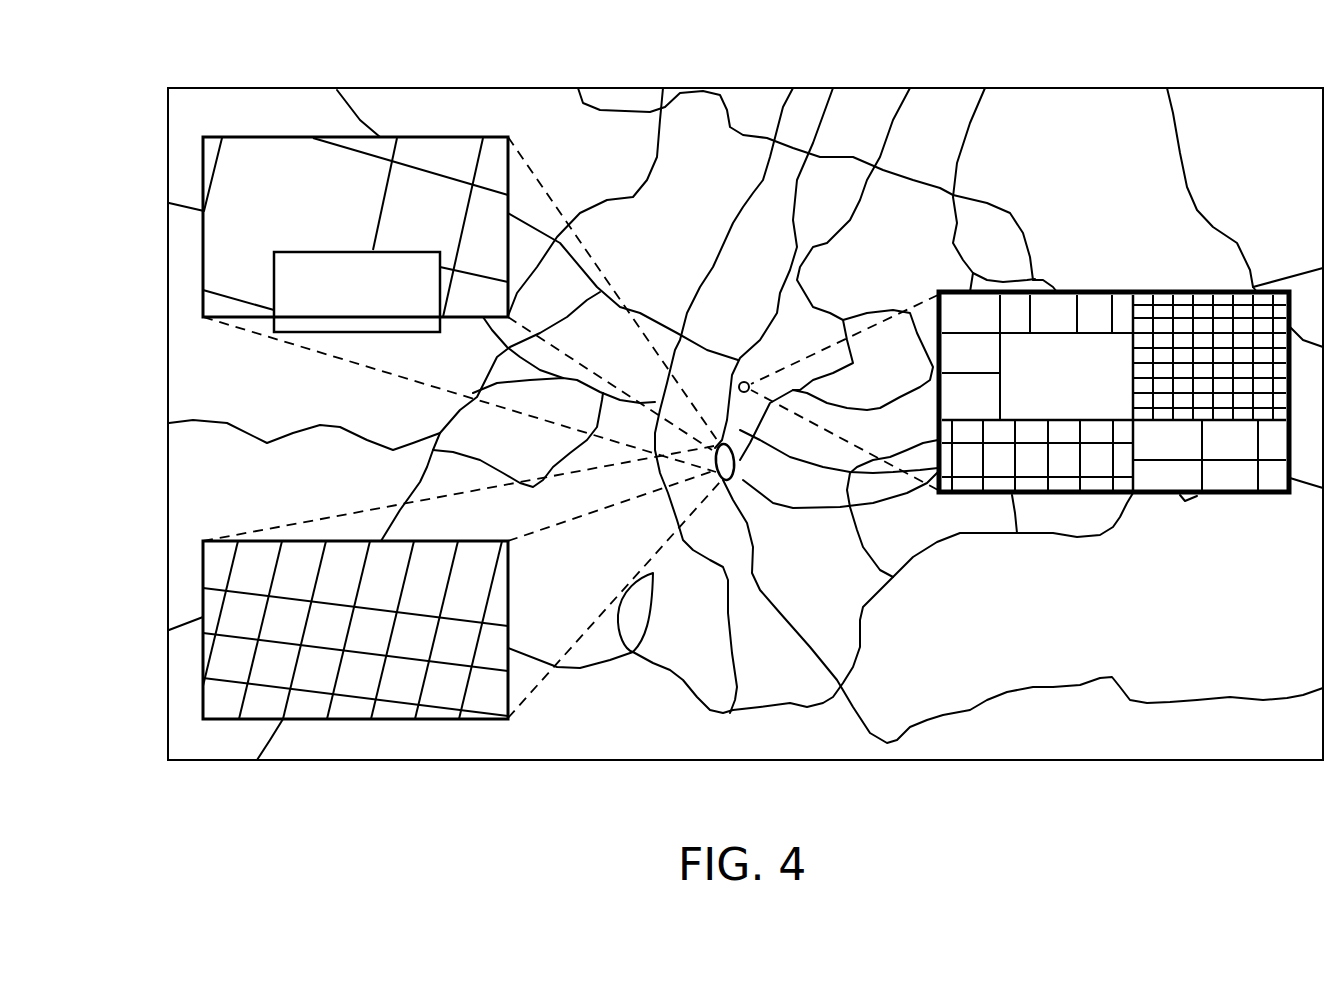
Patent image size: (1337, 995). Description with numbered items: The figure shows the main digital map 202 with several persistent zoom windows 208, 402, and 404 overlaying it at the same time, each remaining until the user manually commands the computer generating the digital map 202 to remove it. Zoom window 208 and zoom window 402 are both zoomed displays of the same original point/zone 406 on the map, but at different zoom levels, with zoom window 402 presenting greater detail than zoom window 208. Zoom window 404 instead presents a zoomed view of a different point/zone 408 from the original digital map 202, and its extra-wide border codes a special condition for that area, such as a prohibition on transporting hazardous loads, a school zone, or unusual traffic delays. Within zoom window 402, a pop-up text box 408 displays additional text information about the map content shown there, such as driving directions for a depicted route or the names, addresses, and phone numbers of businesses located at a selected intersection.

The main digital map 202 is at (406, 88).
The zoom window 208 is at (373, 637).
The zoom window 402 is at (332, 212).
The zoom window 404 is at (1097, 391).
The original point/zone 406 is at (777, 506).
The point/zone / text box 408 is at (420, 205).